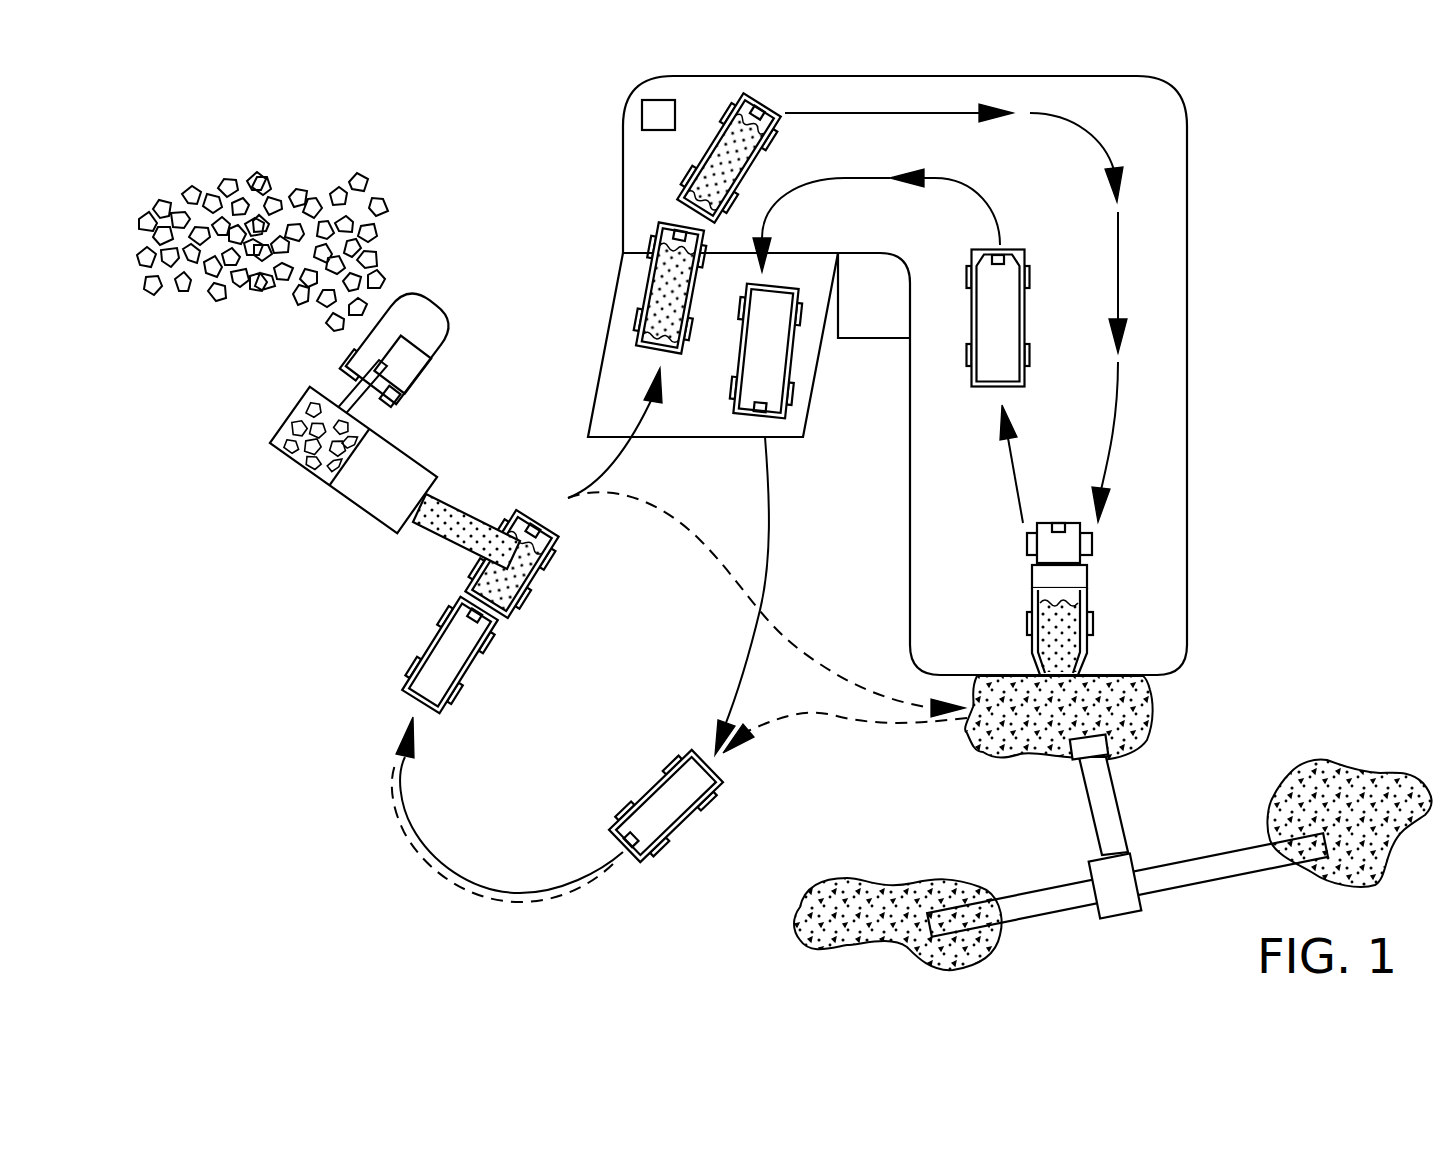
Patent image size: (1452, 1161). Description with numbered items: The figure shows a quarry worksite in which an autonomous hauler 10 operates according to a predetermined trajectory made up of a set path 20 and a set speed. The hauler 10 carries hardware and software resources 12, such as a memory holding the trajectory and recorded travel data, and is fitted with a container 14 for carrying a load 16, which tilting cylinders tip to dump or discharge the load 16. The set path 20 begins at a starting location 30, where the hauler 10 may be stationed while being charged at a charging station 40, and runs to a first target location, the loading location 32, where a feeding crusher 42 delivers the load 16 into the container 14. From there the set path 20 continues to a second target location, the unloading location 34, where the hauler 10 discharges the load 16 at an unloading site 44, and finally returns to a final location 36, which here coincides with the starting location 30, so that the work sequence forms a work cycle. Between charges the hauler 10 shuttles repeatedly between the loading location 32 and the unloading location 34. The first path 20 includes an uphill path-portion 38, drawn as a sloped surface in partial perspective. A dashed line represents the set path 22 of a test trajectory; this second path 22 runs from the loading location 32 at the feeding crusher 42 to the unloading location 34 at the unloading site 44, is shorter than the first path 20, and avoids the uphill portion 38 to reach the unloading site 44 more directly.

The hauler 10 is at (618, 269).
The hardware and software resources 12 is at (679, 235).
The container 14 is at (670, 287).
The load 16 is at (665, 297).
The set path 20 is at (766, 530).
The set path of the test trajectory 22 is at (797, 715).
The starting location 30 is at (914, 367).
The final location 36 is at (914, 367).
The loading location 32 is at (340, 630).
The unloading location 34 is at (1233, 493).
The uphill path-portion 38 is at (588, 378).
The charging station 40 is at (640, 113).
The feeding crusher 42 is at (407, 333).
The unloading site 44 is at (1115, 715).